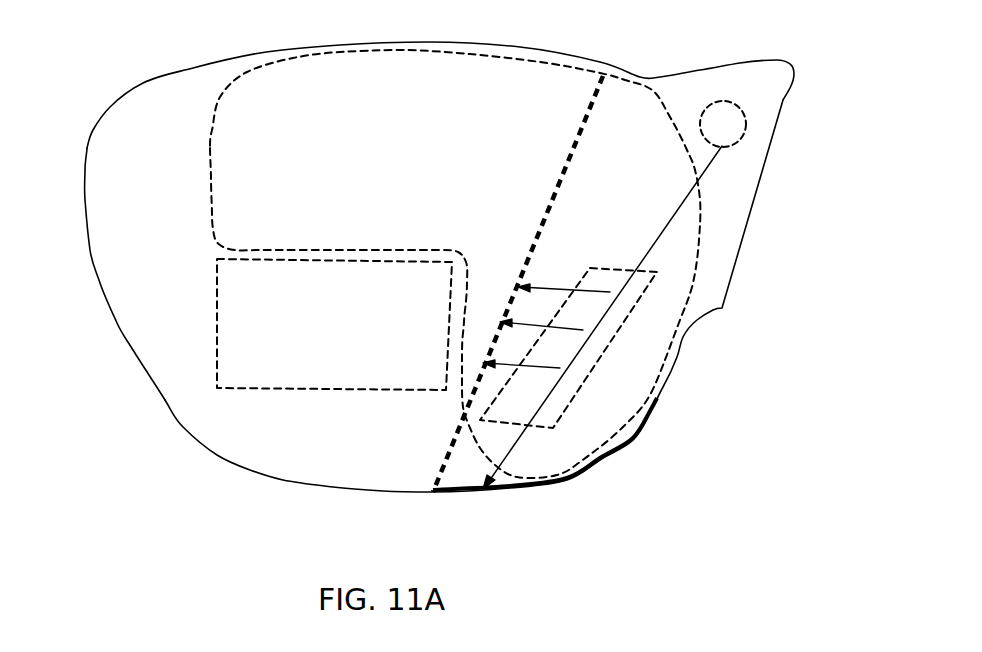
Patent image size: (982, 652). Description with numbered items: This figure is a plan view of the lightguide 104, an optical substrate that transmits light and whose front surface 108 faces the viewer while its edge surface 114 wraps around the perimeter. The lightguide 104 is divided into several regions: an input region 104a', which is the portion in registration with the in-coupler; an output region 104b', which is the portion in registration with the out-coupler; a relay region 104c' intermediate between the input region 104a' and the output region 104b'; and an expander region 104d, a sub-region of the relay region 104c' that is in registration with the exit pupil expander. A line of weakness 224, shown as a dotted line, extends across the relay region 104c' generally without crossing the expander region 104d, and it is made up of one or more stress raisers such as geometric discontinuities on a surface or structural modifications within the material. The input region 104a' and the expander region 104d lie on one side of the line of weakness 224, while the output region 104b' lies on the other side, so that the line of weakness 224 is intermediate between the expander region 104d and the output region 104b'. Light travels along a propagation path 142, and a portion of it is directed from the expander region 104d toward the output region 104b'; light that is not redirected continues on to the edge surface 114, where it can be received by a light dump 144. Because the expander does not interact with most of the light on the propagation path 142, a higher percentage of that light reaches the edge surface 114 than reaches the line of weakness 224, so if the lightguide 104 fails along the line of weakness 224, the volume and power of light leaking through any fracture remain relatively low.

The lightguide 104 is at (425, 287).
The front surface 108 is at (153, 112).
The edge surface 114 is at (285, 481).
The line of weakness 224 is at (603, 76).
The input region 104a' is at (751, 79).
The output region 104b' is at (334, 324).
The relay region 104c' is at (455, 264).
The expander region 104d is at (573, 380).
The propagation path 142 is at (672, 197).
The light dump 144 is at (540, 490).